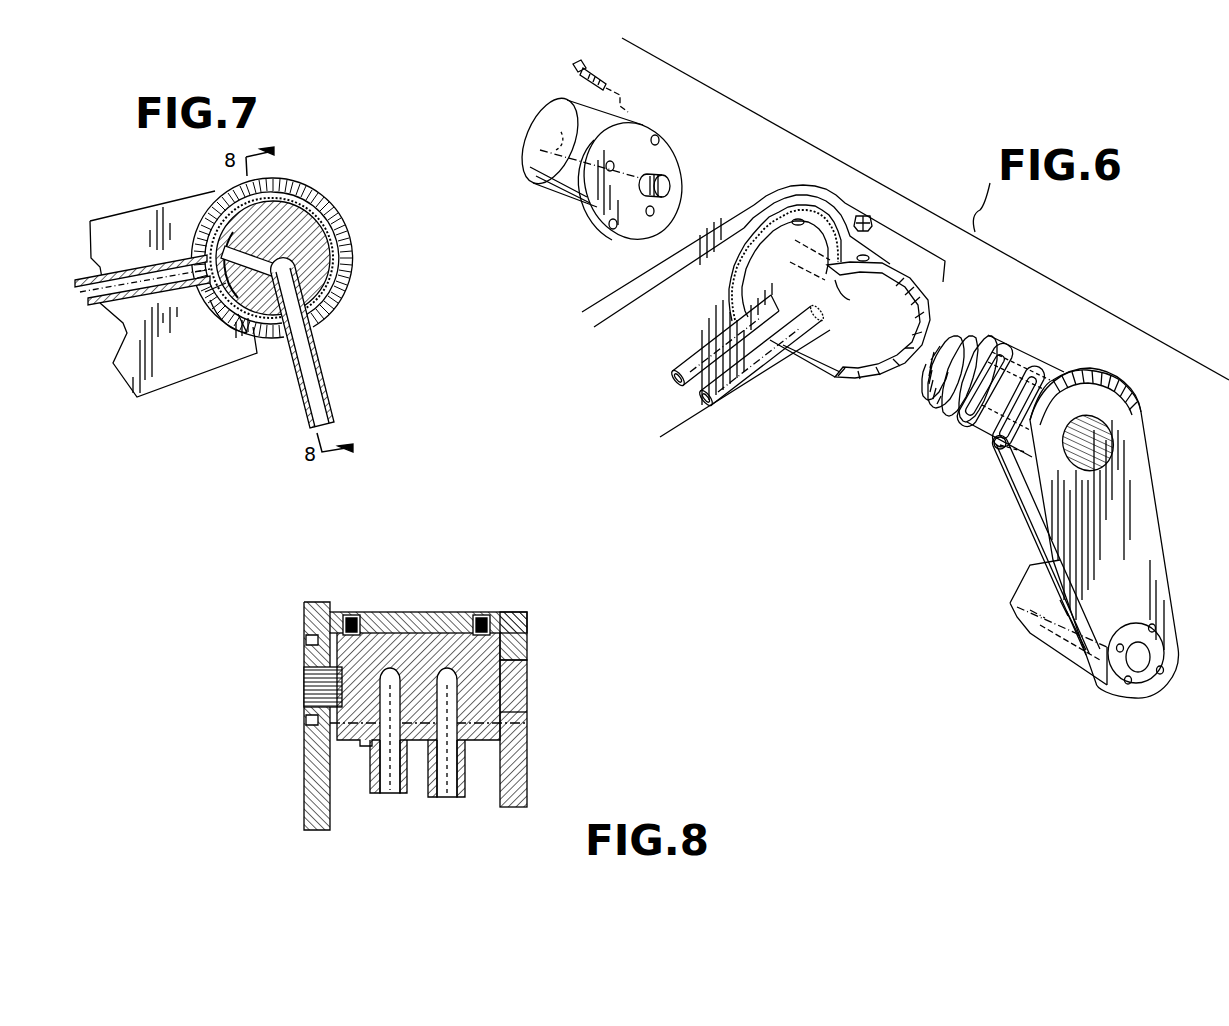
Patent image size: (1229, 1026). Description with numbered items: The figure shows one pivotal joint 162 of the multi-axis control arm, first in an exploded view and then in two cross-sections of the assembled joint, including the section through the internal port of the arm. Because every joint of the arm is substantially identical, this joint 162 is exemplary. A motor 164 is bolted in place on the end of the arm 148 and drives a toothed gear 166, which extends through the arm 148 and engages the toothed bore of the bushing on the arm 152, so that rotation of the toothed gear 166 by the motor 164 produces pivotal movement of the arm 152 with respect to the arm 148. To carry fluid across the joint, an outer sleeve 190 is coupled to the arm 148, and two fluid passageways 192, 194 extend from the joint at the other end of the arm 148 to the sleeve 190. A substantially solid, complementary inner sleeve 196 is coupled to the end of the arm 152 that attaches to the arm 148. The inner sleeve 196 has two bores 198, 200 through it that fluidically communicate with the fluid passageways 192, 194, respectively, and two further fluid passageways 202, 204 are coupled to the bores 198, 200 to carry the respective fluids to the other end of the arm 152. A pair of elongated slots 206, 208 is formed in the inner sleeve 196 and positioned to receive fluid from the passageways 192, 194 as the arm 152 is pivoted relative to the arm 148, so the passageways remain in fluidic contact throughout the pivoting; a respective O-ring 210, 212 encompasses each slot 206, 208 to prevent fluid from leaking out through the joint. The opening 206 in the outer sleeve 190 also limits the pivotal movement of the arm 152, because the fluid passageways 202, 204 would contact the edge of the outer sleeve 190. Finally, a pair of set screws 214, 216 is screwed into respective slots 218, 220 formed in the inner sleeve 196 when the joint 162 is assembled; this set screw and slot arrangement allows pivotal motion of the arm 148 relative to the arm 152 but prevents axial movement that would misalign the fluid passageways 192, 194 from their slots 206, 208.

In FIG. 7, the arm 148 is at (138, 212).
In FIG. 6, the arm 148 is at (607, 300).
In FIG. 8, the arm 148 is at (527, 778).
In FIG. 6, the arm 152 is at (1160, 562).
In FIG. 6, the pivotal joint 162 is at (833, 262).
In FIG. 6, the motor 164 is at (537, 130).
In FIG. 6, the toothed gear 166 is at (668, 168).
In FIG. 7, the outer sleeve 190 is at (337, 227).
In FIG. 6, the outer sleeve 190 is at (918, 305).
In FIG. 8, the outer sleeve 190 is at (415, 716).
In FIG. 7, the fluid passageway 192 is at (85, 283).
In FIG. 6, the fluid passageway 192 is at (668, 370).
In FIG. 6, the fluid passageway 194 is at (725, 402).
In FIG. 7, the inner sleeve 196 is at (273, 258).
In FIG. 6, the inner sleeve 196 is at (1035, 352).
In FIG. 8, the inner sleeve 196 is at (520, 693).
In FIG. 7, the bore 198 is at (290, 296).
In FIG. 8, the bore 198 is at (392, 676).
In FIG. 8, the bore 200 is at (447, 676).
In FIG. 7, the fluid passageway 202 is at (323, 385).
In FIG. 6, the fluid passageway 202 is at (1017, 500).
In FIG. 8, the fluid passageway 202 is at (402, 797).
In FIG. 8, the fluid passageway 204 is at (457, 800).
In FIG. 7, the elongated slot 206 is at (250, 337).
In FIG. 6, the elongated slot 206 is at (1002, 352).
In FIG. 6, the elongated slot 208 is at (1060, 372).
In FIG. 7, the O-ring 210 is at (293, 190).
In FIG. 6, the O-ring 210 is at (948, 397).
In FIG. 6, the O-ring 212 is at (995, 452).
In FIG. 8, the set screw 214 is at (347, 612).
In FIG. 8, the set screw 216 is at (488, 612).
In FIG. 8, the slot 218 is at (306, 650).
In FIG. 8, the slot 220 is at (527, 637).